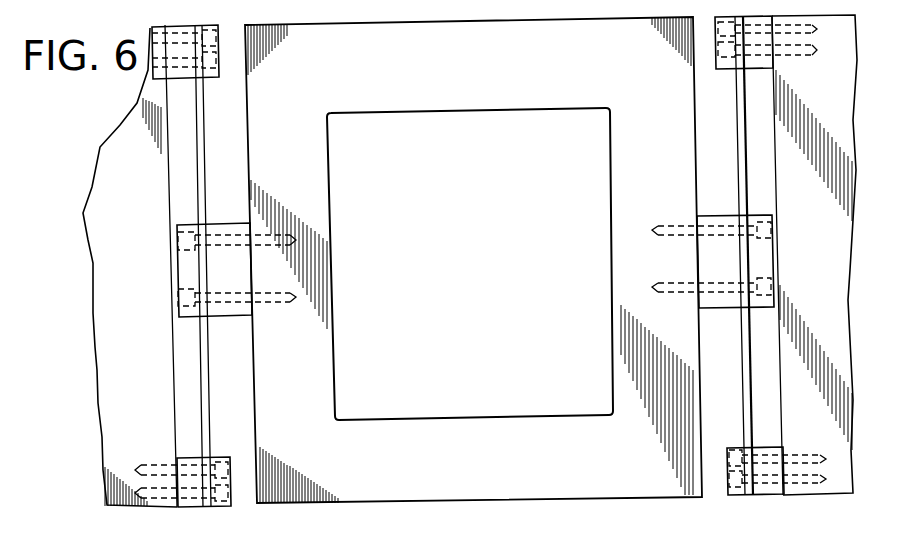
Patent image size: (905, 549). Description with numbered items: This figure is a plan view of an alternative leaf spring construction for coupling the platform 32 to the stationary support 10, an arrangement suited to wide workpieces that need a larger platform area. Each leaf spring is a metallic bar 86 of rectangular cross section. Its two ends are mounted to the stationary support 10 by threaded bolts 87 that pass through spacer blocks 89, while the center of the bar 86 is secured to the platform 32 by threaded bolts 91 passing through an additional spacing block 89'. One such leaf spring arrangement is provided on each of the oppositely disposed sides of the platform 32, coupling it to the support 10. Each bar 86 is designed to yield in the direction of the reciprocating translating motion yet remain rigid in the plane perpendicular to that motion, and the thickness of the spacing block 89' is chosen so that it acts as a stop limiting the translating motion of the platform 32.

The stationary support 10 is at (145, 420).
The platform 32 is at (510, 463).
The metallic bar 86 is at (202, 150).
The threaded bolts 87 is at (218, 38).
The spacer blocks 89 is at (477, 282).
The additional spacing block 89' is at (475, 266).
The threaded bolts 91 is at (180, 242).